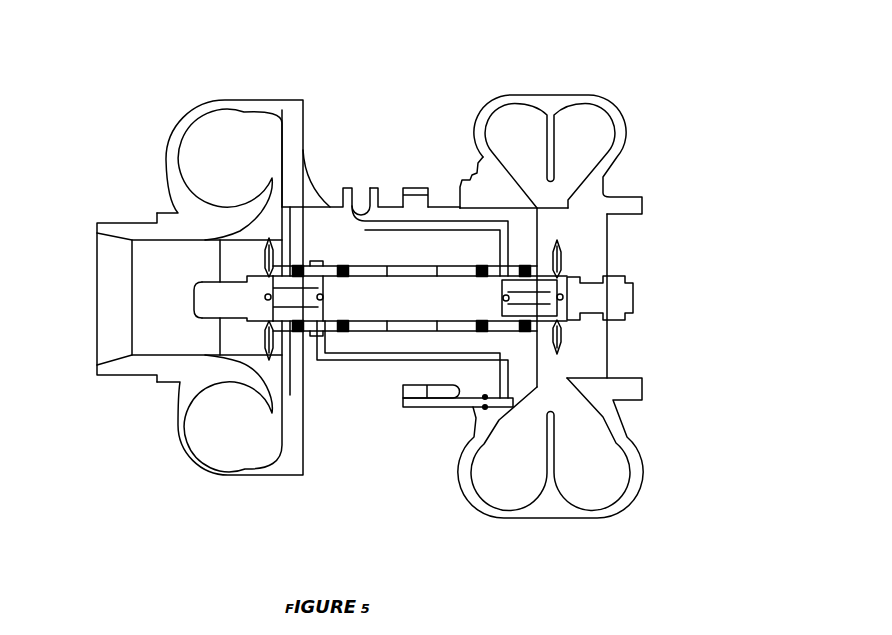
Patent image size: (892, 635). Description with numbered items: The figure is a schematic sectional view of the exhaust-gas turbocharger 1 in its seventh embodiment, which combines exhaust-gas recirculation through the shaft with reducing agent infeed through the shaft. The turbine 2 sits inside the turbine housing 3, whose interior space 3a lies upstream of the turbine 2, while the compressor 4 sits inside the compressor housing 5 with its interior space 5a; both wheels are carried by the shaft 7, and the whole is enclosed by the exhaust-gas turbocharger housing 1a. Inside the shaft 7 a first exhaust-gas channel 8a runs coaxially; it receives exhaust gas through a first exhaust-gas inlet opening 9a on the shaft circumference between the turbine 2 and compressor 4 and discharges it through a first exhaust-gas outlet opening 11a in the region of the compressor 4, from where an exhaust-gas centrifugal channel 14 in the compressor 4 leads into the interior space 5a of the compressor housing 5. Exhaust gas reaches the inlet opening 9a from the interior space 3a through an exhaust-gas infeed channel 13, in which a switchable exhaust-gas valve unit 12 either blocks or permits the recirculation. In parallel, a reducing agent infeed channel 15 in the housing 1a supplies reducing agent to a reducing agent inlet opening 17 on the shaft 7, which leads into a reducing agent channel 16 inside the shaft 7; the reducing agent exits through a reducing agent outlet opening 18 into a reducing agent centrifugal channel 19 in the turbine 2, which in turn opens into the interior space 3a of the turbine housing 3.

The exhaust-gas turbocharger 1 is at (371, 284).
The exhaust-gas turbocharger housing 1a is at (468, 210).
The turbine 2 is at (598, 258).
The turbine housing 3 is at (620, 388).
The interior space of the turbine housing 3a is at (596, 142).
The compressor 4 is at (235, 266).
The compressor housing 5 is at (187, 223).
The interior space of the compressor housing 5a is at (198, 168).
The shaft 7 is at (198, 303).
The first exhaust-gas channel 8a is at (298, 302).
The first exhaust-gas inlet opening 9a is at (323, 297).
The first exhaust-gas outlet opening 11a is at (295, 298).
The switchable exhaust-gas valve unit 12 is at (502, 386).
The exhaust-gas infeed channel 13 is at (448, 408).
The exhaust-gas centrifugal channel 14 is at (272, 258).
The reducing agent infeed channel 15 is at (456, 230).
The reducing agent channel 16 is at (535, 300).
The reducing agent inlet opening 17 is at (500, 298).
The reducing agent outlet opening 18 is at (563, 296).
The reducing agent centrifugal channel 19 is at (562, 345).